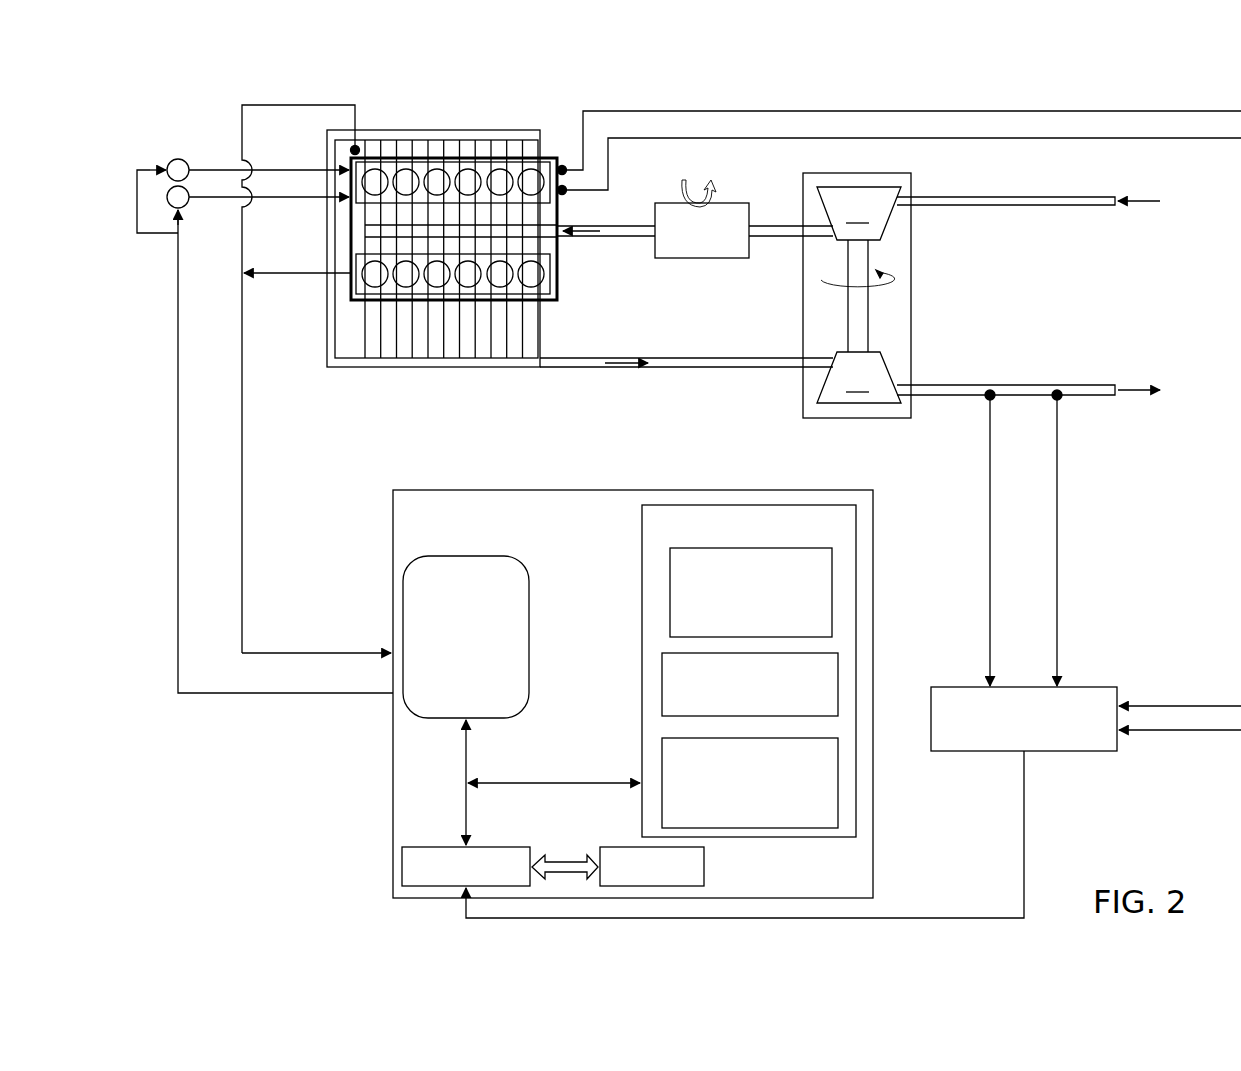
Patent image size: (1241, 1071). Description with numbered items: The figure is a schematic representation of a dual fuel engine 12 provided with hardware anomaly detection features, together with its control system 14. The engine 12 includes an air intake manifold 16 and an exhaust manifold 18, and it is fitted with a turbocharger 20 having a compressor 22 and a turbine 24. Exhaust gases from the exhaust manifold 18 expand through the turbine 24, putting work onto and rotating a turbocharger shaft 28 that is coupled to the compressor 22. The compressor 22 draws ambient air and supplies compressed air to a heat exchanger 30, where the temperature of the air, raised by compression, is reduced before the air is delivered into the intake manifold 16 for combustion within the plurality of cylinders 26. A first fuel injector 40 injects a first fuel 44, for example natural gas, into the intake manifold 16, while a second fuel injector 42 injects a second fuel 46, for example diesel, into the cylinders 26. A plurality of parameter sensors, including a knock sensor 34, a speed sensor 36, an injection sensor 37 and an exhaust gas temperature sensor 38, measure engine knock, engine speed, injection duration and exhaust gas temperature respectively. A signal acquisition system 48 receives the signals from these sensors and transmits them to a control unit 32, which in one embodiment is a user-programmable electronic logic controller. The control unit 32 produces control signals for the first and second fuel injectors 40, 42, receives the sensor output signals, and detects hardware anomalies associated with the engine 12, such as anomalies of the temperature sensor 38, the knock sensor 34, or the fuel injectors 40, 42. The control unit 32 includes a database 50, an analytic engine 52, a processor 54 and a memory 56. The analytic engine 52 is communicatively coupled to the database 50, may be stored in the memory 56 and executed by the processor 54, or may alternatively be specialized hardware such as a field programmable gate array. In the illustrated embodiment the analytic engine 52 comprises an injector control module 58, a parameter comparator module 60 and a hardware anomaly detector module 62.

The engine 12 is at (352, 376).
The control system 14 is at (380, 861).
The air intake manifold 16 is at (622, 242).
The exhaust manifold 18 is at (736, 356).
The turbocharger 20 is at (912, 264).
The compressor 22 is at (859, 213).
The turbine 24 is at (859, 377).
The cylinders 26 is at (437, 294).
The turbocharger shaft 28 is at (869, 325).
The heat exchanger 30 is at (700, 260).
The control unit 32 is at (448, 490).
The knock sensor 34 is at (561, 165).
The speed sensor 36 is at (566, 194).
The injection sensor 37 is at (357, 147).
The temperature sensor 38 is at (988, 400).
The first fuel injector 40 is at (178, 158).
The second fuel injector 42 is at (187, 205).
The first fuel 44 is at (270, 167).
The second fuel 46 is at (302, 202).
The signal acquisition system 48 is at (1102, 687).
The database 50 is at (529, 562).
The analytic engine 52 is at (857, 542).
The processor 54 is at (420, 847).
The memory 56 is at (705, 866).
The injector control module 58 is at (662, 697).
The parameter comparator module 60 is at (670, 580).
The hardware anomaly detector module 62 is at (662, 772).